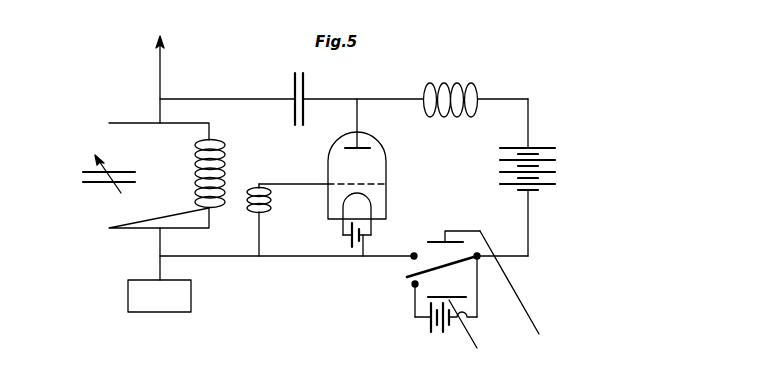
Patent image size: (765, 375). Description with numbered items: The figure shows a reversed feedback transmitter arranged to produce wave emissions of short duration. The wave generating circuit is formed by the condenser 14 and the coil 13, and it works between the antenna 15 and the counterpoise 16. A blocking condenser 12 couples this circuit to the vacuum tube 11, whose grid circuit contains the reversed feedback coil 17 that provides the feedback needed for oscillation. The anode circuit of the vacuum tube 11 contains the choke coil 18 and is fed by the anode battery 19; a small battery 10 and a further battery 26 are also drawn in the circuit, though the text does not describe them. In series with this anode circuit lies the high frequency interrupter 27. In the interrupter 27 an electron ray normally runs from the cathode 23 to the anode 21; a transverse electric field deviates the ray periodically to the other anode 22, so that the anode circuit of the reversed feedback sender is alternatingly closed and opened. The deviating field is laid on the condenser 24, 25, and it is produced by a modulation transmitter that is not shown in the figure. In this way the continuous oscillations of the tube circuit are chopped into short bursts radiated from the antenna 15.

The filament battery 10 is at (349, 239).
The vacuum tube 11 is at (357, 183).
The blocking condenser 12 is at (315, 97).
The coil of the wave generating circuit 13 is at (167, 175).
The condenser 14 is at (93, 174).
The antenna 15 is at (172, 79).
The counterpoise 16 is at (173, 296).
The reversed feedback coil of the grid circuit 17 is at (267, 212).
The choke coil of the anode circuit 18 is at (451, 88).
The anode battery 19 is at (544, 169).
The anode 21 is at (410, 258).
The anode 22 is at (412, 286).
The cathode 23 is at (479, 257).
The condenser 24 is at (434, 240).
The condenser 25 is at (452, 285).
The battery 26 is at (435, 326).
The high frequency interrupter 27 is at (427, 258).